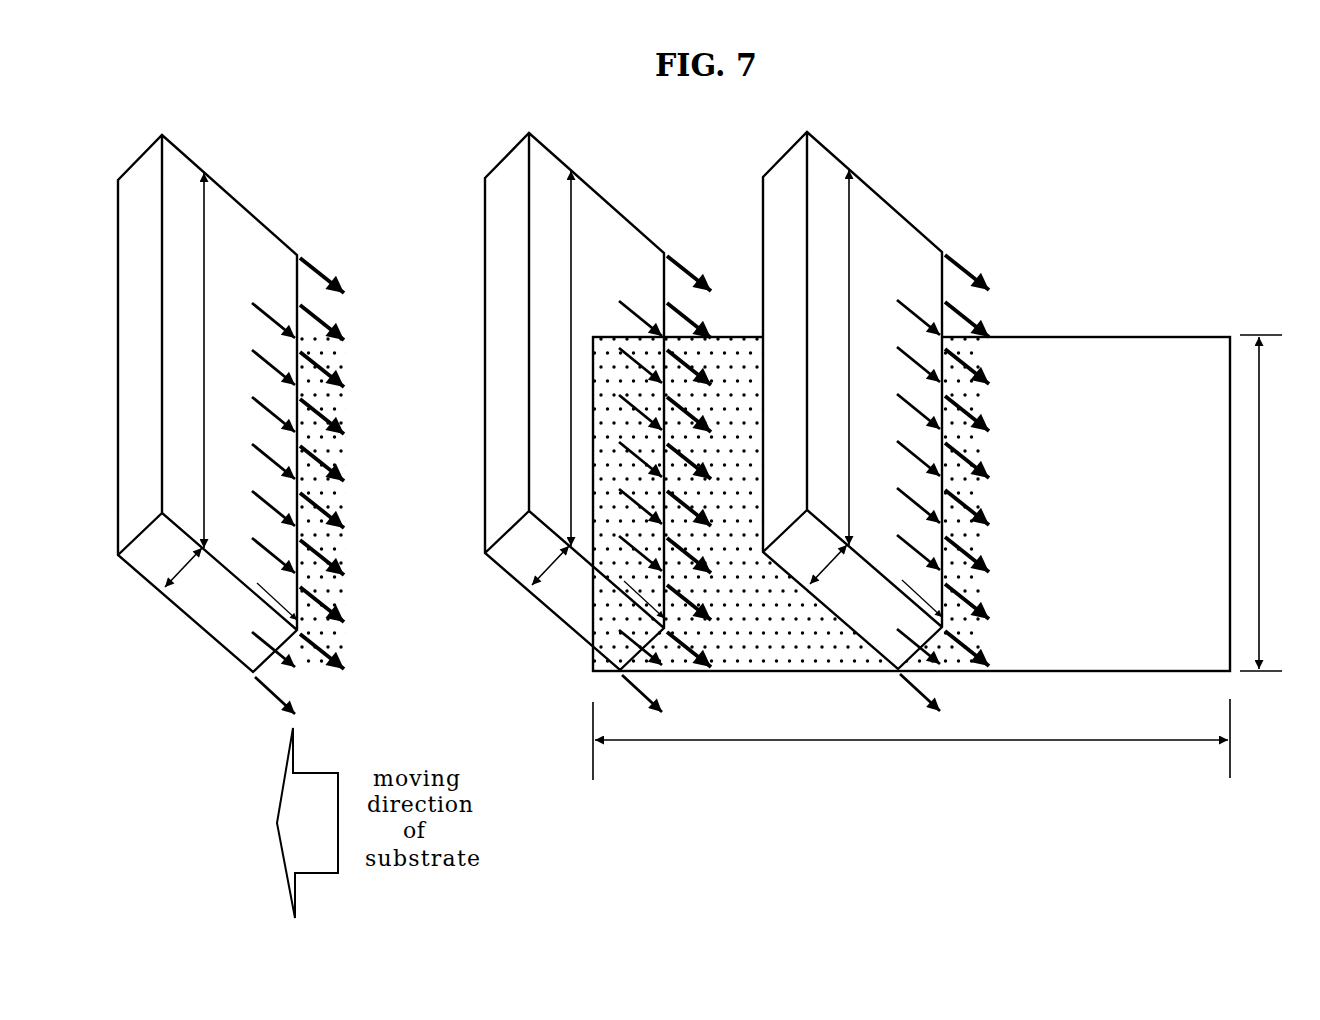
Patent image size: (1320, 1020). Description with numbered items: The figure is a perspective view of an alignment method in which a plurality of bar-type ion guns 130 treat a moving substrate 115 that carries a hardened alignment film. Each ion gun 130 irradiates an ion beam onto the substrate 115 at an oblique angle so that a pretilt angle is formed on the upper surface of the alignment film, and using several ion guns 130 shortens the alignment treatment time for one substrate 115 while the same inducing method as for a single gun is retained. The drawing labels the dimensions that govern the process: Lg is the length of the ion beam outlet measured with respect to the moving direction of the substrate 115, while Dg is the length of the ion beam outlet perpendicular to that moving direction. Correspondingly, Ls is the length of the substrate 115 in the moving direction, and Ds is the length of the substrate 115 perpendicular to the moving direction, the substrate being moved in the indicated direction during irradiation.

The bar-type ion gun 130 is at (248, 248).
The substrate 115 is at (1112, 357).
The length of the ion beam outlet perpendicular to the moving direction Dg is at (543, 359).
The length of the ion beam outlet with respect to the moving direction Lg is at (510, 575).
The length of the substrate perpendicular to the moving direction Ds is at (1270, 503).
The length of the substrate in the moving direction Ls is at (898, 739).